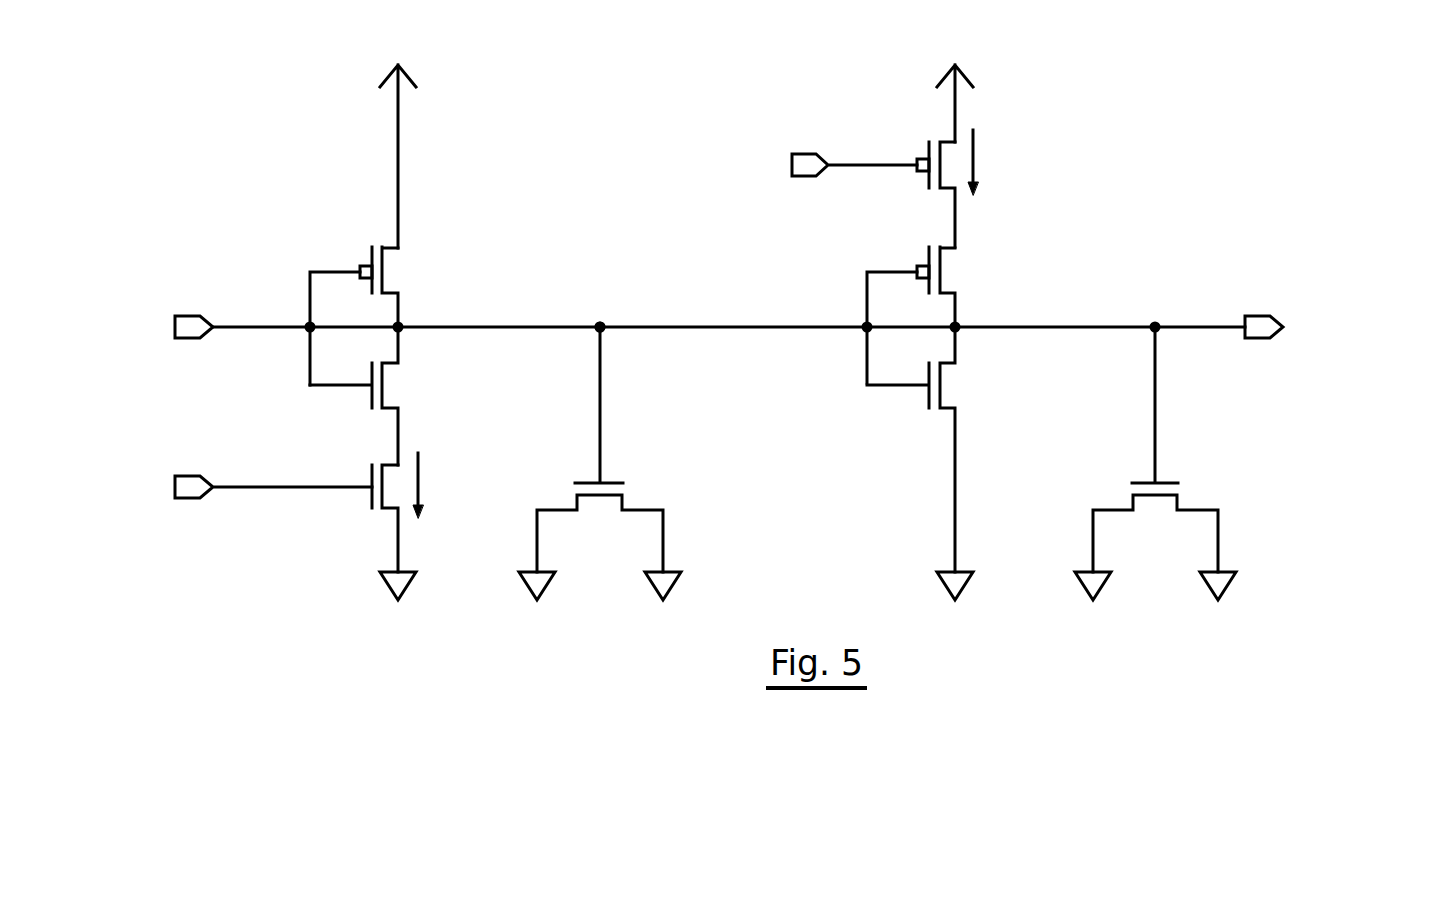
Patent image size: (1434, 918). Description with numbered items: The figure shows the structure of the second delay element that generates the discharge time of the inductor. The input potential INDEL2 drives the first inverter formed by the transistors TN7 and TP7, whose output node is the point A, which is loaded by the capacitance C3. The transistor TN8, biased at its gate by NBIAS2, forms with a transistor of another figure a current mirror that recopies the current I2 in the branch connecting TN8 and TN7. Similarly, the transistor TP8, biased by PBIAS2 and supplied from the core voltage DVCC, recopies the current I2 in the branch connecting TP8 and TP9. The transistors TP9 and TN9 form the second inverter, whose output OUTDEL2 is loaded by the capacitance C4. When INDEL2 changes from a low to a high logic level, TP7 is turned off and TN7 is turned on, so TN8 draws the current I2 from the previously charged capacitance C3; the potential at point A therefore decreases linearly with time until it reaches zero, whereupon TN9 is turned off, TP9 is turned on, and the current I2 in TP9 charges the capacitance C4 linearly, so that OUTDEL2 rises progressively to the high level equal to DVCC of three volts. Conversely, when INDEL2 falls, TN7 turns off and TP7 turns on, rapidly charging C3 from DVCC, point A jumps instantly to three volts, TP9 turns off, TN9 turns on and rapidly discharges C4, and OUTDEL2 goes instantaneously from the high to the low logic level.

The transistor TP7 is at (382, 316).
The transistor TN7 is at (382, 396).
The transistor TN8 is at (372, 532).
The transistor TP8 is at (910, 194).
The transistor TP9 is at (940, 315).
The transistor TN9 is at (940, 463).
The capacitance C3 is at (600, 463).
The capacitance C4 is at (1155, 463).
The point A is at (599, 310).
The current I2 is at (711, 324).
The core voltage DVCC is at (677, 141).
The potential INDEL2 is at (135, 327).
The NMOS bias signal NBIAS2 is at (214, 487).
The PMOS bias signal PBIAS2 is at (822, 146).
The output OUTDEL2 is at (1332, 327).